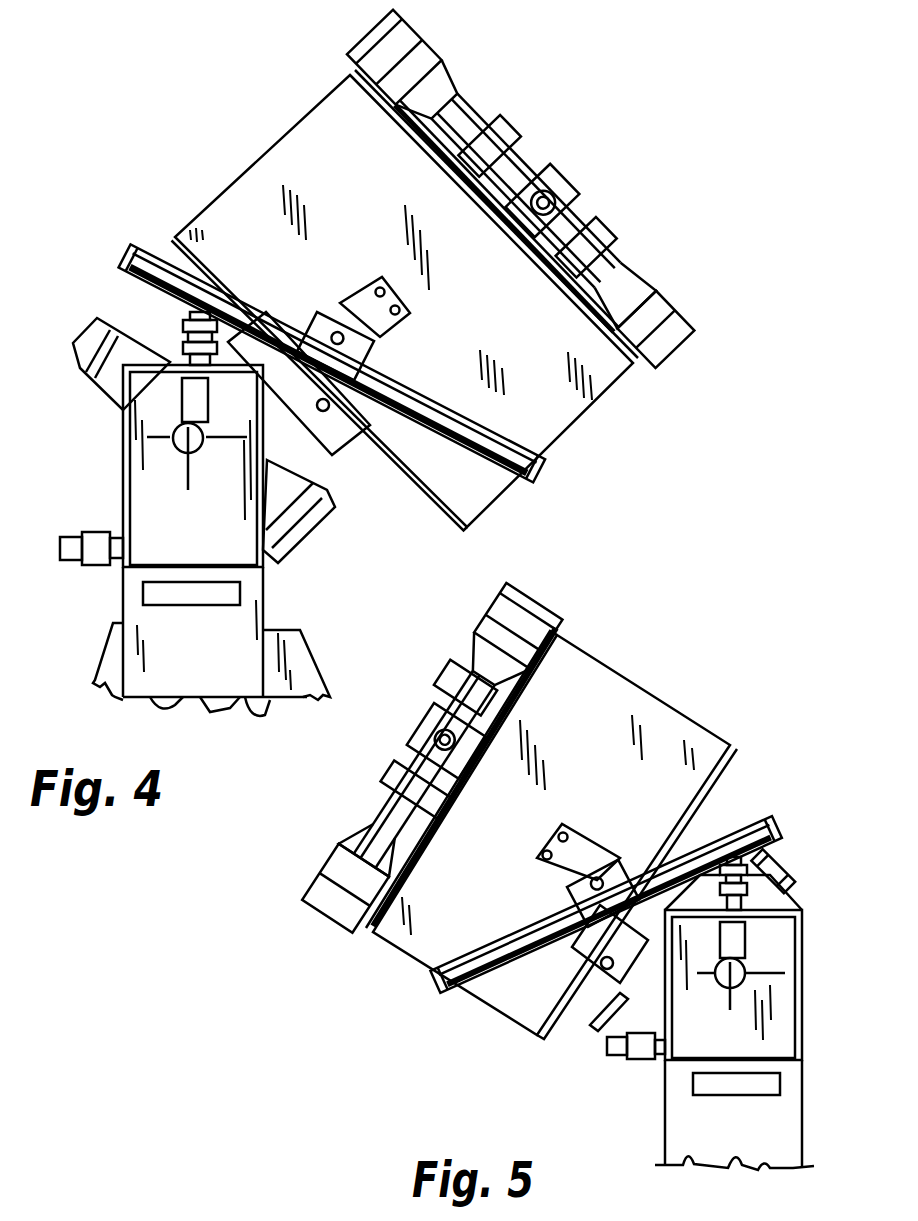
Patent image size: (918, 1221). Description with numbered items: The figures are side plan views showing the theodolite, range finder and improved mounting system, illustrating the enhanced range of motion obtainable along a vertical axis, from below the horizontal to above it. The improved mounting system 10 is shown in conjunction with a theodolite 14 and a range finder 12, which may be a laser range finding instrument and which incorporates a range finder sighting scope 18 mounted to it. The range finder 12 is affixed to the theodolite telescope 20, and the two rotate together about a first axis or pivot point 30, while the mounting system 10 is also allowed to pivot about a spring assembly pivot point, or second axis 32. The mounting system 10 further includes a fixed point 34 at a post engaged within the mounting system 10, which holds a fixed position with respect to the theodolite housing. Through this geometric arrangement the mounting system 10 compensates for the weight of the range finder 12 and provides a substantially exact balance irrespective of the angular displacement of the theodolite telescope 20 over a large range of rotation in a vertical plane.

In FIG. 4, the mounting system 10 is at (307, 327).
In FIG. 4, the range finder 12 is at (300, 112).
In FIG. 5, the range finder 12 is at (657, 687).
In FIG. 4, the theodolite 14 is at (123, 582).
In FIG. 5, the theodolite 14 is at (663, 1122).
In FIG. 4, the range finder sighting scope 18 is at (705, 329).
In FIG. 5, the range finder sighting scope 18 is at (563, 607).
In FIG. 4, the theodolite telescope 20 is at (320, 527).
In FIG. 5, the theodolite telescope 20 is at (783, 884).
In FIG. 4, the pivot point 30 is at (172, 450).
In FIG. 5, the pivot point 30 is at (733, 983).
In FIG. 4, the spring assembly pivot point 32 is at (335, 332).
In FIG. 5, the spring assembly pivot point 32 is at (593, 875).
In FIG. 4, the fixed point 34 is at (182, 312).
In FIG. 5, the fixed point 34 is at (767, 860).